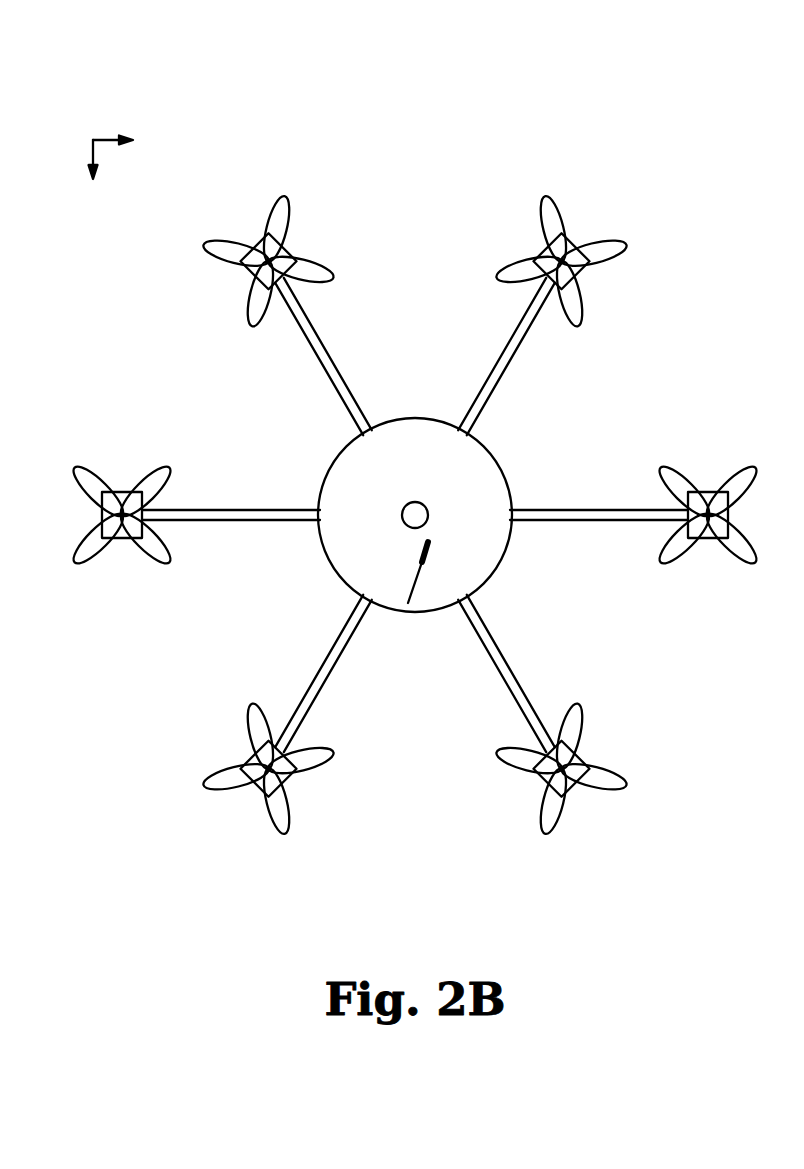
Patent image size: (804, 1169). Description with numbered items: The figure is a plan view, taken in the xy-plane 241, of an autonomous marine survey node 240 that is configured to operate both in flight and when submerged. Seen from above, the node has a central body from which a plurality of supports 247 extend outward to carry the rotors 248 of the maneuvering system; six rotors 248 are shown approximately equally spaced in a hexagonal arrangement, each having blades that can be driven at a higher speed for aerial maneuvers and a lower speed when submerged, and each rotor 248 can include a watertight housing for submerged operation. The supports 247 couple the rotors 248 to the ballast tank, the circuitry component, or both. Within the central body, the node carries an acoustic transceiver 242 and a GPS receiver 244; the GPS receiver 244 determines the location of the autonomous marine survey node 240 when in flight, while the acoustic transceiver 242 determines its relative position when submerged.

The autonomous marine survey node 240 is at (604, 60).
The xy-plane 241 is at (93, 140).
The acoustic transceiver 242 is at (402, 517).
The GPS receiver 244 is at (431, 550).
The supports 247 is at (308, 343).
The rotors 248 is at (283, 197).